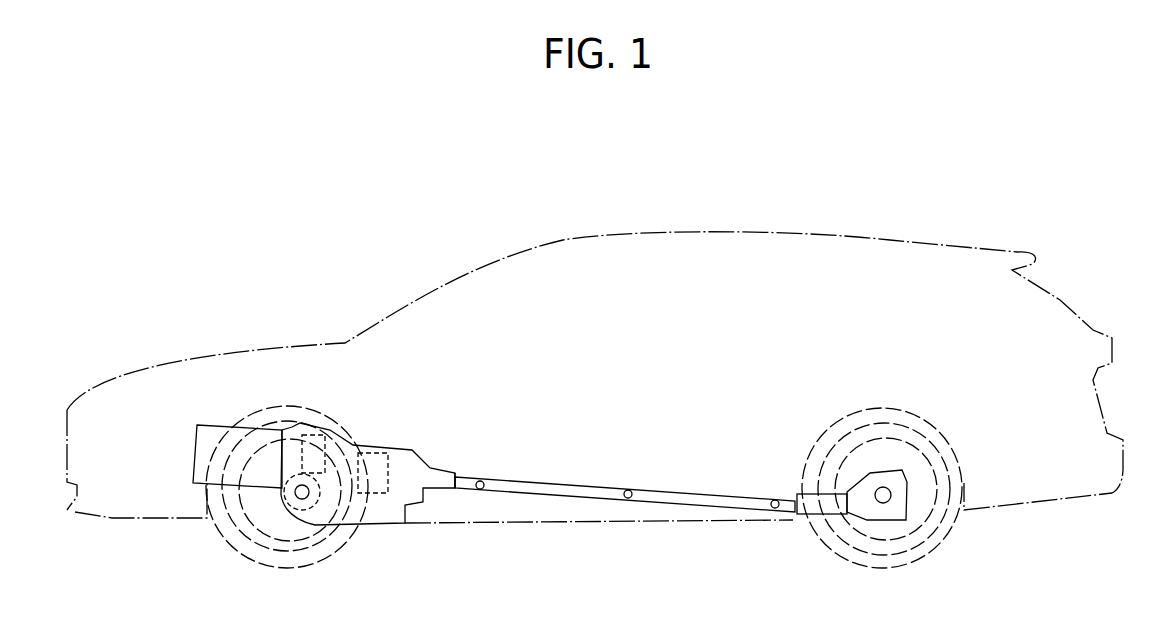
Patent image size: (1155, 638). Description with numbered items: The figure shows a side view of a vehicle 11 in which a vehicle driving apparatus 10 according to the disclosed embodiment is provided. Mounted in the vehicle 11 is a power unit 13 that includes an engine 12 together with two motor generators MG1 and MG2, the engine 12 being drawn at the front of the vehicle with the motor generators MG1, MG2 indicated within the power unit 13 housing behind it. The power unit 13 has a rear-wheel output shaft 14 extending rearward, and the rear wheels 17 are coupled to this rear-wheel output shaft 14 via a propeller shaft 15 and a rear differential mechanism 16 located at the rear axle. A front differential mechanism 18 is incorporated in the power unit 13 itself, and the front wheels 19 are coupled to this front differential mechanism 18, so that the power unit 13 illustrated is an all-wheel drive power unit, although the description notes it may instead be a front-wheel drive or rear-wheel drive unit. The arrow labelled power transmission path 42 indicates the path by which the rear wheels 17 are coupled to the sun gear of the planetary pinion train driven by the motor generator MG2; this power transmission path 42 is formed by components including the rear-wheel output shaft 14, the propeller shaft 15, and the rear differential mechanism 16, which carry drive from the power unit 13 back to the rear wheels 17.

The vehicle driving apparatus 10 is at (184, 401).
The vehicle 11 is at (183, 262).
The engine 12 is at (195, 440).
The power unit 13 is at (432, 450).
The motor generator MG1 is at (315, 435).
The motor generator MG2 is at (373, 477).
The rear-wheel output shaft 14 is at (463, 490).
The propeller shaft 15 is at (583, 487).
The power transmission path 42 is at (685, 478).
The rear differential mechanism 16 is at (863, 513).
The rear wheels 17 is at (937, 538).
The front differential mechanism 18 is at (308, 497).
The front wheels 19 is at (255, 552).